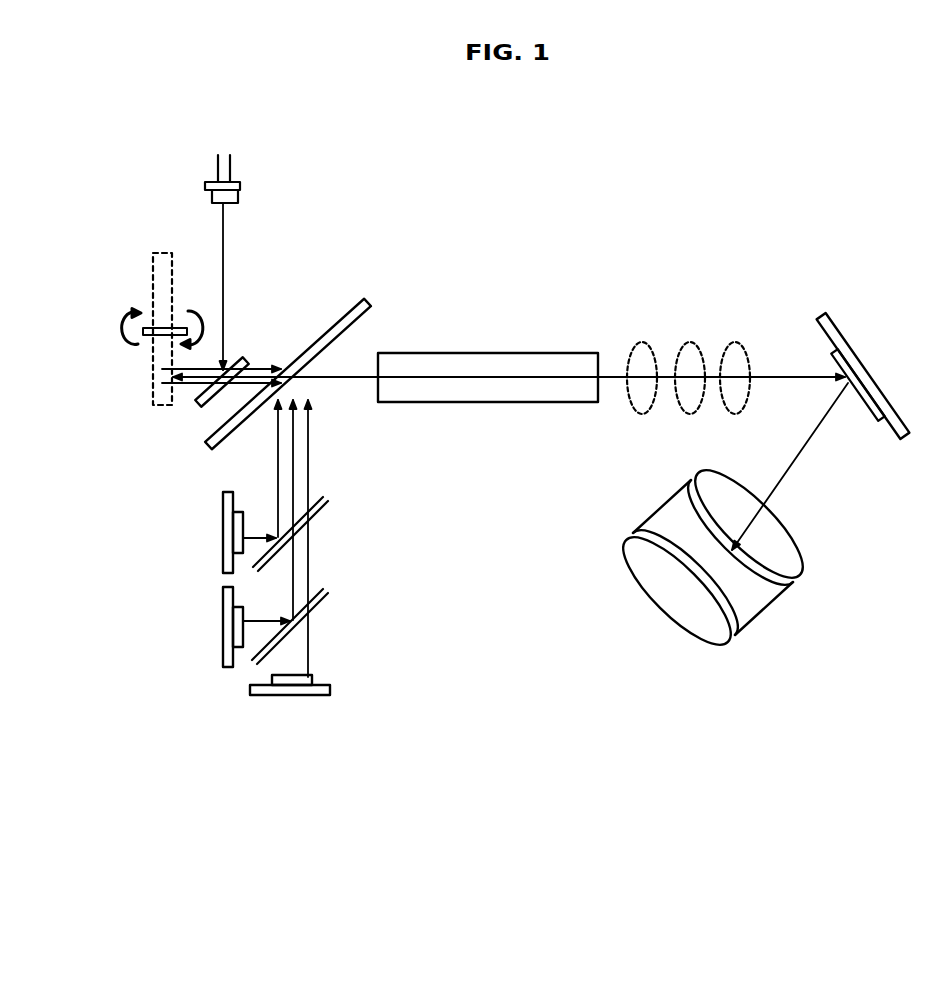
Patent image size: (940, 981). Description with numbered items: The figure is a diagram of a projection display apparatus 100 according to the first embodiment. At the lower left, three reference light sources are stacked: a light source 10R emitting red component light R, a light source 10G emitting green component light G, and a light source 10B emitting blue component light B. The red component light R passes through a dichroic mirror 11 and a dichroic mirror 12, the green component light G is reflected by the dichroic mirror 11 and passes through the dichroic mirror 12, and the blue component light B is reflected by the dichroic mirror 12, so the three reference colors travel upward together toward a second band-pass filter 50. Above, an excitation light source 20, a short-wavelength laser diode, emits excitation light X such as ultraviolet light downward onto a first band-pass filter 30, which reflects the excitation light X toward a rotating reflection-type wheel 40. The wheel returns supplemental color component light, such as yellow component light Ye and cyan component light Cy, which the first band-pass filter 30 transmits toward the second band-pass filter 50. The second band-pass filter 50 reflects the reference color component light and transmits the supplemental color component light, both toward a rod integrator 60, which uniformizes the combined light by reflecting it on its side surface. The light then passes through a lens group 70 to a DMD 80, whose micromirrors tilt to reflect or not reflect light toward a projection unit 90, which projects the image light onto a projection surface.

The projection display apparatus 100 is at (784, 236).
The excitation light source 20 is at (240, 187).
The excitation light X is at (225, 252).
The reflection-type wheel 40 is at (153, 271).
The first band-pass filter 30 is at (200, 404).
The second band-pass filter 50 is at (357, 302).
The yellow component light Ye is at (219, 367).
The cyan component light Cy is at (281, 367).
The rod integrator 60 is at (487, 365).
The lens group 70 is at (755, 335).
The DMD 80 is at (863, 378).
The projection unit 90 is at (757, 597).
The blue component light B is at (280, 448).
The green component light G is at (295, 475).
The red component light R is at (310, 560).
The dichroic mirror 12 is at (327, 510).
The dichroic mirror 11 is at (328, 607).
The light source 10B is at (223, 532).
The light source 10G is at (223, 619).
The light source 10R is at (290, 695).